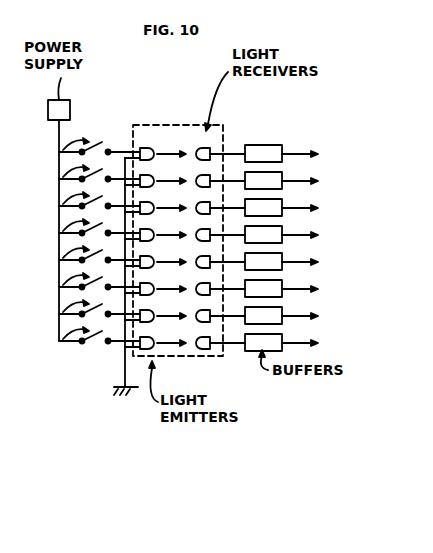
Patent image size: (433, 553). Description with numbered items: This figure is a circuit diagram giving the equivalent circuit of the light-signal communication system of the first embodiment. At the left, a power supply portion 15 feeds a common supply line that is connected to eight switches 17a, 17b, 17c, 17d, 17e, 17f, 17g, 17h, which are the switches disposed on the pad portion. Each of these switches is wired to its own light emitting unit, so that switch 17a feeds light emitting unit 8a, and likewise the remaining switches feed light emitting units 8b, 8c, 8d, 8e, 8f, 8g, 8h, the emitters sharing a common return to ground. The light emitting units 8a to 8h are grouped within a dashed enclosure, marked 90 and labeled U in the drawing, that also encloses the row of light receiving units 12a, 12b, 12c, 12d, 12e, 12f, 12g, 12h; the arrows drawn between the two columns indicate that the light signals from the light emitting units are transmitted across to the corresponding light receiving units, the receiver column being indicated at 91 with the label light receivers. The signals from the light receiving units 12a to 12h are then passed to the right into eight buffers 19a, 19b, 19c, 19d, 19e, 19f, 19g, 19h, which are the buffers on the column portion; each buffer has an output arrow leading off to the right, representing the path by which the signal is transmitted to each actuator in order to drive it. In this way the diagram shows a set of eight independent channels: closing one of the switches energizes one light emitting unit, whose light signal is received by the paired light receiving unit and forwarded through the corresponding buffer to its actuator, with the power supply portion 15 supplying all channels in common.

The power supply portion 15 is at (70, 108).
The switch 17a is at (59, 150).
The switch 17b is at (59, 177).
The switch 17c is at (59, 204).
The switch 17d is at (59, 231).
The switch 17e is at (59, 258).
The switch 17f is at (59, 285).
The switch 17g is at (59, 312).
The switch 17h is at (59, 339).
The light emitting unit 8a is at (146, 149).
The light emitting unit 8b is at (146, 176).
The light emitting unit 8c is at (146, 203).
The light emitting unit 8d is at (146, 230).
The light emitting unit 8e is at (146, 257).
The light emitting unit 8f is at (146, 284).
The light emitting unit 8g is at (146, 311).
The light emitting unit 8h is at (146, 338).
The light receiving unit 12a is at (211, 149).
The light receiving unit 12b is at (211, 176).
The light receiving unit 12c is at (211, 203).
The light receiving unit 12d is at (211, 230).
The light receiving unit 12e is at (211, 257).
The light receiving unit 12f is at (211, 284).
The light receiving unit 12g is at (211, 311).
The light receiving unit 12h is at (211, 338).
The buffer 19a is at (278, 147).
The buffer 19b is at (278, 174).
The buffer 19c is at (278, 201).
The buffer 19d is at (278, 228).
The buffer 19e is at (278, 255).
The buffer 19f is at (278, 282).
The buffer 19g is at (278, 309).
The buffer 19h is at (278, 336).
The optical coupling unit (dashed enclosure) 90 is at (146, 117).
The light receivers group 91 is at (231, 216).
The unit U is at (173, 226).